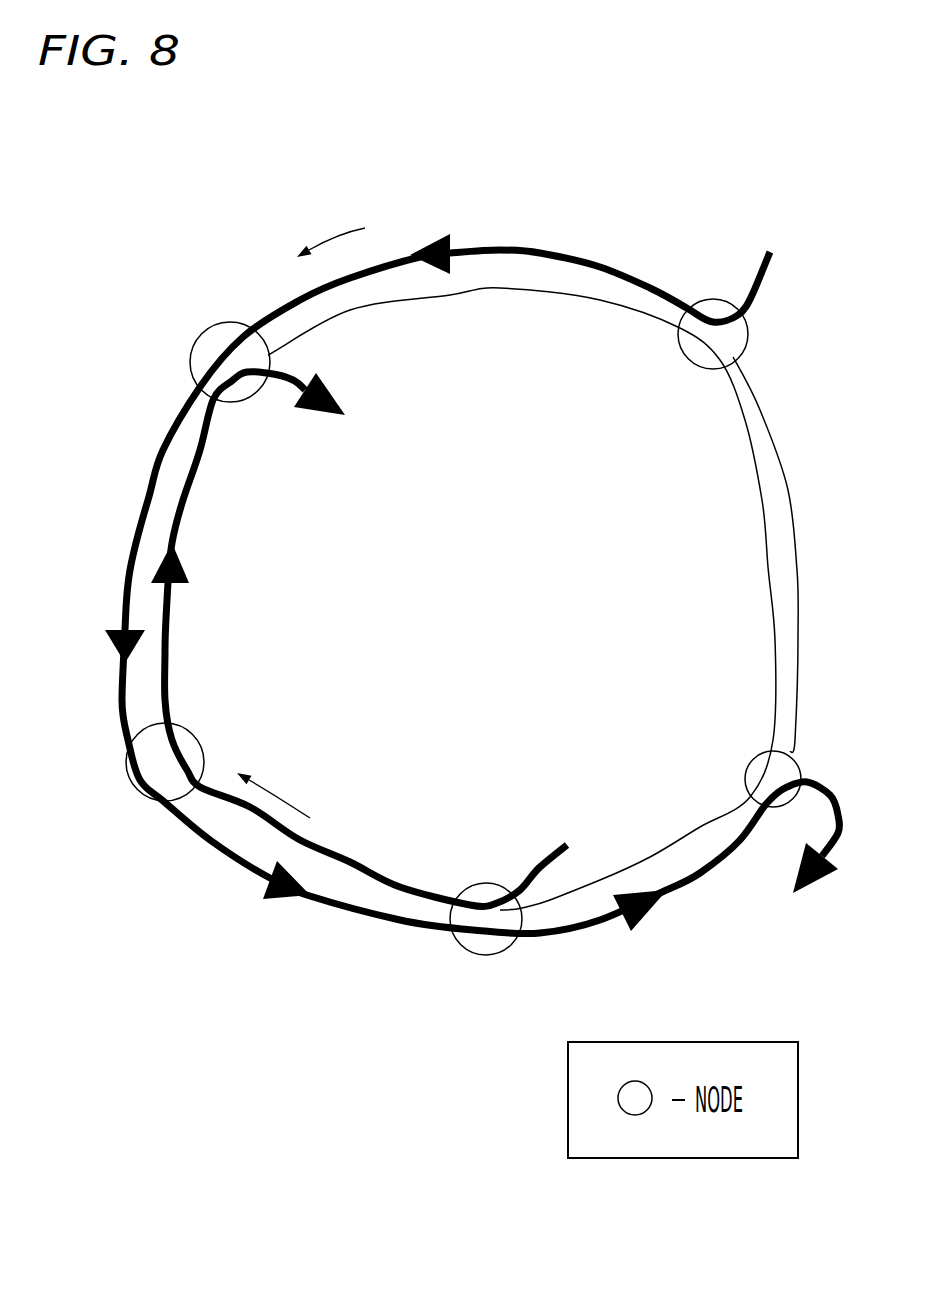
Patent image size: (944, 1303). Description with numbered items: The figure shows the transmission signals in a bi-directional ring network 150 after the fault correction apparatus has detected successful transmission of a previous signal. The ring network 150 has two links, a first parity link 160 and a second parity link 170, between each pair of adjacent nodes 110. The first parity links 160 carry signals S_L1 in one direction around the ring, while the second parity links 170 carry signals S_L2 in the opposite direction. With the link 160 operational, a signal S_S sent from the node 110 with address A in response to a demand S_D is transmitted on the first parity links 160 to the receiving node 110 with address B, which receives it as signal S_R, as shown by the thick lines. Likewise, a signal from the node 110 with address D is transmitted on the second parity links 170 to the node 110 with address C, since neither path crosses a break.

The bi-directional ring network 150 is at (466, 182).
The first parity link 160 is at (590, 252).
The second parity link 170 is at (768, 567).
The node 110 is at (187, 733).